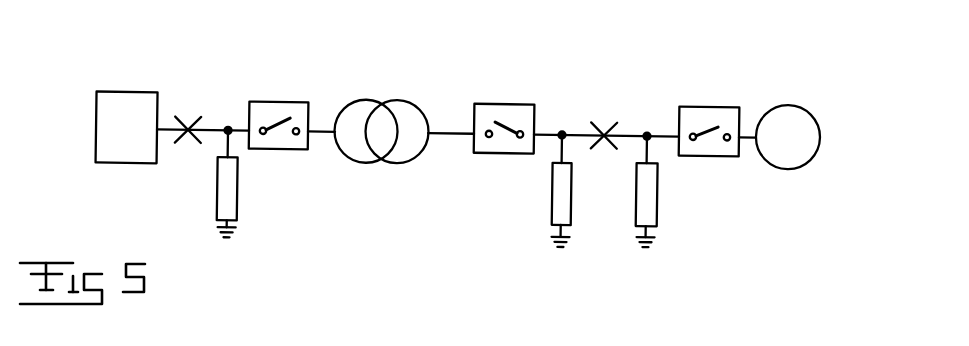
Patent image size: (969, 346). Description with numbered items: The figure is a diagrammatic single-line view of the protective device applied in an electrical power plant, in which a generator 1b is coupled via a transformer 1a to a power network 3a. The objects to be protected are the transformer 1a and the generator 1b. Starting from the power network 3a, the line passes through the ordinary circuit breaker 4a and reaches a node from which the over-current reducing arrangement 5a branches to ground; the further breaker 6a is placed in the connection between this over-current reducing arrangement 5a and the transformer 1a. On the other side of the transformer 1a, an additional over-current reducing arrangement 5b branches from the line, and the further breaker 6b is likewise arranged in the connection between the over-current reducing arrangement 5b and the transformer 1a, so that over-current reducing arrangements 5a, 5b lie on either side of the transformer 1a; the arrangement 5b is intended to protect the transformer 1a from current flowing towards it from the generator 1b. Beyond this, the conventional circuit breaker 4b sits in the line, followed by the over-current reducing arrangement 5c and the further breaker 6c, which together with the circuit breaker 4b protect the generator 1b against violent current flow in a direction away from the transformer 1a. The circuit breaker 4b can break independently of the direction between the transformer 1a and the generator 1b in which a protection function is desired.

The transformer 1a is at (388, 83).
The generator 1b is at (780, 114).
The power network 3a is at (121, 108).
The ordinary circuit breaker 4a is at (194, 116).
The conventional circuit breaker 4b is at (610, 119).
The over-current reducing arrangement 5a is at (233, 200).
The additional over-current reducing arrangement 5b is at (556, 197).
The over-current reducing arrangement 5c is at (645, 196).
The further breaker 6a is at (270, 112).
The further breaker 6b is at (498, 109).
The further breaker 6c is at (700, 109).